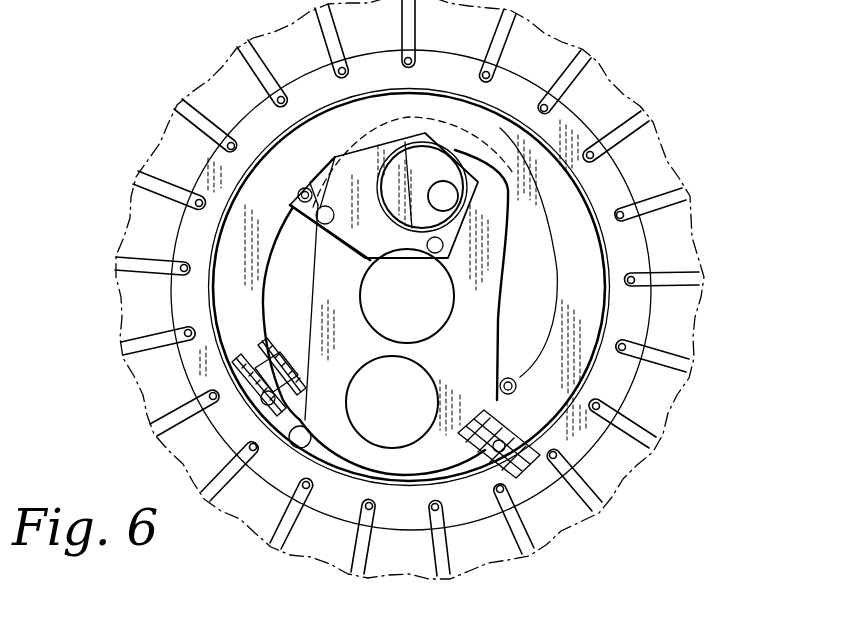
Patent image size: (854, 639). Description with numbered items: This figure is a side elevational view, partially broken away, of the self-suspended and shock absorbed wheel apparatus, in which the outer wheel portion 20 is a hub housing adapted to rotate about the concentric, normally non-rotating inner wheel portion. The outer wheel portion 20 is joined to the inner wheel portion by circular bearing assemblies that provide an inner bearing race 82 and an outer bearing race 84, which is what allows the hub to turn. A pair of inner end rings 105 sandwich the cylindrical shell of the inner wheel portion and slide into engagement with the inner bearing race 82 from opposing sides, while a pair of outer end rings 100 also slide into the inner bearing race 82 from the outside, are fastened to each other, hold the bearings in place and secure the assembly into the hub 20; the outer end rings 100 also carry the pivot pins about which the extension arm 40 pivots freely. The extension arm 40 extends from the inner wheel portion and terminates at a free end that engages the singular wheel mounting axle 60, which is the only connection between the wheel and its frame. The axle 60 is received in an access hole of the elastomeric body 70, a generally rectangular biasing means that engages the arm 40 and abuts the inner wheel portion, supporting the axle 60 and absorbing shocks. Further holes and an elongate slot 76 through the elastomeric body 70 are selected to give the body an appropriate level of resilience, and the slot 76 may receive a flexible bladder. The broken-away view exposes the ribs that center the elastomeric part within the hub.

The outer wheel portion 20 is at (640, 318).
The outer end rings 100 is at (570, 212).
The wheel mounting axle 60 is at (405, 140).
The elastomeric body 70 is at (494, 302).
The elongate slot 76 is at (411, 400).
The extension arm 40 is at (335, 243).
The inner end rings 105 is at (283, 378).
The inner bearing race 82 is at (268, 379).
The outer bearing race 84 is at (285, 394).